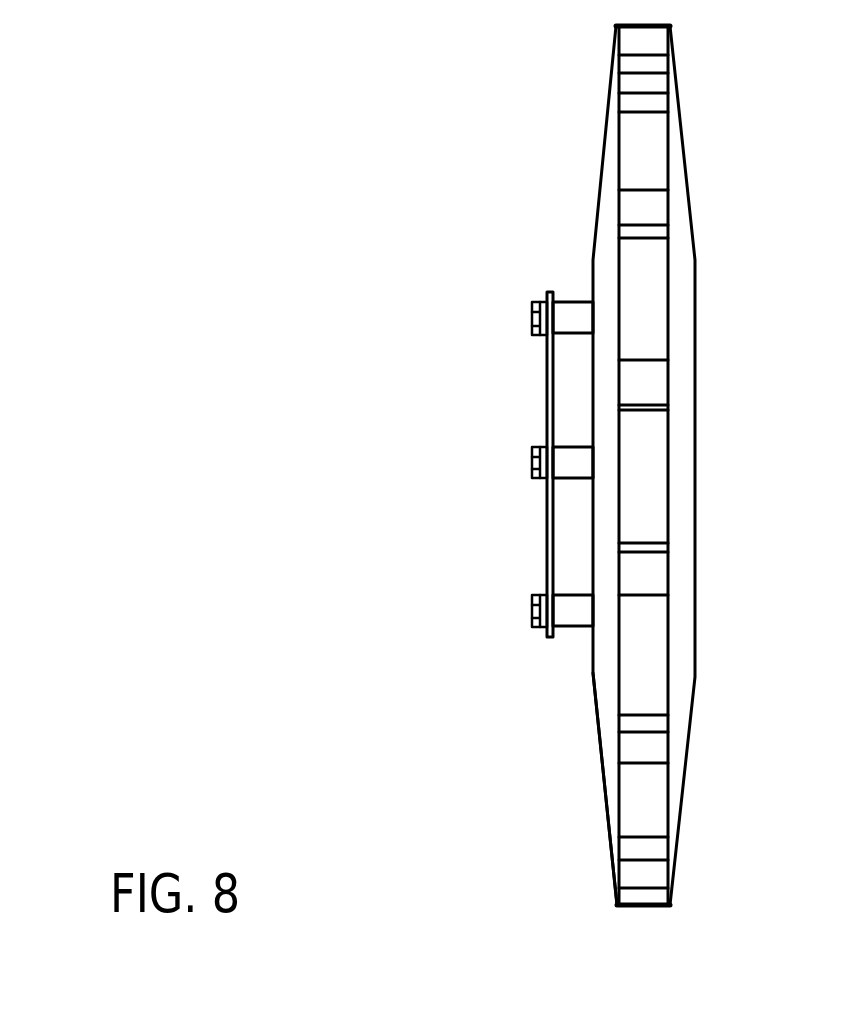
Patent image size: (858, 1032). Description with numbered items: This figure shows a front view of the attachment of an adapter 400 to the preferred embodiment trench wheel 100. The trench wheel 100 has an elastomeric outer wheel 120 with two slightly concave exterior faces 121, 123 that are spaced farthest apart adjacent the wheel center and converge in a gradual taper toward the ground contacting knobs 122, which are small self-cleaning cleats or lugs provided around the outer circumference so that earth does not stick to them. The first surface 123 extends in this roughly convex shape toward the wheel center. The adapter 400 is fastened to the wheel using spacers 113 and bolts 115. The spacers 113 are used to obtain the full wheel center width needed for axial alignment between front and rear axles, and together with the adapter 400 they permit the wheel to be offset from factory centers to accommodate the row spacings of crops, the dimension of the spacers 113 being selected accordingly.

The trench wheel 100 is at (487, 108).
The spacers 113 is at (577, 312).
The bolts 115 is at (538, 323).
The elastomeric outer wheel 120 is at (697, 310).
The exterior face 121 is at (683, 505).
The ground contacting knobs 122 is at (657, 205).
The first surface 123 is at (604, 751).
The adapter 400 is at (546, 552).